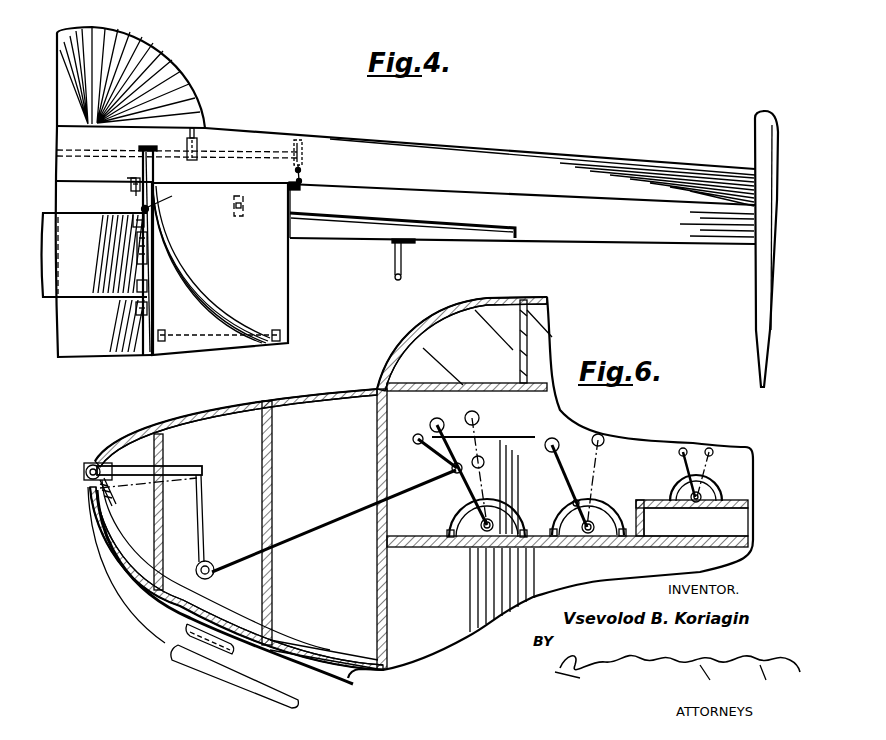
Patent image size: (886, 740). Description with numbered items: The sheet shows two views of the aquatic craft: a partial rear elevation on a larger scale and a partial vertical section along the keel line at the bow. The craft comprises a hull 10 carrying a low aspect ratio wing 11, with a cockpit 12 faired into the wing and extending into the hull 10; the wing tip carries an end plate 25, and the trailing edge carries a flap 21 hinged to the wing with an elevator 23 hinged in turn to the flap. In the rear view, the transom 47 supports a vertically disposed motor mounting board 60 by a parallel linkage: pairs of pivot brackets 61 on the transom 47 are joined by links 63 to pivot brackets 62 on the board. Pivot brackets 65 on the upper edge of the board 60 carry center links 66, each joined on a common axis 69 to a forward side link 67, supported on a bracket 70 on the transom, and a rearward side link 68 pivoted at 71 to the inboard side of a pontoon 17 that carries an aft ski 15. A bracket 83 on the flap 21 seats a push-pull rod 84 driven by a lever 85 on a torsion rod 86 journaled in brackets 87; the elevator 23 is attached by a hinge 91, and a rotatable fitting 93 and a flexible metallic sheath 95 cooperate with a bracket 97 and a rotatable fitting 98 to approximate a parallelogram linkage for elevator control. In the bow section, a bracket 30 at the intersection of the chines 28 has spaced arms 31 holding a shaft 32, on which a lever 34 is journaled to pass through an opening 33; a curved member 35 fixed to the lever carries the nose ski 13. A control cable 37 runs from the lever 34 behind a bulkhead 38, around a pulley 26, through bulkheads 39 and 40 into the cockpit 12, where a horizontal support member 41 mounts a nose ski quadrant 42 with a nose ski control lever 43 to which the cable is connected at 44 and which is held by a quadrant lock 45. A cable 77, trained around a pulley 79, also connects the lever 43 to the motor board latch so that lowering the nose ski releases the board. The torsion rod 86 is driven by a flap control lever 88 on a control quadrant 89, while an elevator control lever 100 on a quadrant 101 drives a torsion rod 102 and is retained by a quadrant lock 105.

In FIG. 4, the hull 10 is at (88, 350).
In FIG. 6, the hull 10 is at (280, 650).
In FIG. 4, the wing 11 is at (587, 146).
In FIG. 6, the cockpit 12 is at (557, 420).
In FIG. 6, the nose ski 13 is at (338, 692).
In FIG. 4, the aft ski 15 is at (232, 345).
In FIG. 4, the pontoon 17 is at (284, 290).
In FIG. 4, the flap 21 is at (615, 240).
In FIG. 4, the elevator 23 is at (490, 240).
In FIG. 4, the end plate 25 is at (756, 143).
In FIG. 6, the pulley 26 is at (215, 560).
In FIG. 6, the chines 28 is at (352, 650).
In FIG. 6, the bracket 30 is at (114, 500).
In FIG. 6, the spaced arms 31 is at (98, 462).
In FIG. 6, the shaft 32 is at (84, 476).
In FIG. 6, the opening 33 is at (118, 487).
In FIG. 6, the lever 34 is at (176, 466).
In FIG. 6, the curved member 35 is at (112, 568).
In FIG. 6, the control cable 37 is at (336, 528).
In FIG. 6, the bulkhead 38 is at (165, 530).
In FIG. 6, the bulkhead 39 is at (274, 452).
In FIG. 6, the bulkhead 40 is at (378, 470).
In FIG. 6, the horizontal support member 41 is at (418, 550).
In FIG. 6, the nose ski quadrant 42 is at (515, 486).
In FIG. 6, the nose ski control lever 43 is at (442, 418).
In FIG. 6, the cable connection 44 is at (455, 476).
In FIG. 6, the quadrant lock 45 is at (450, 522).
In FIG. 4, the transom 47 is at (90, 315).
In FIG. 4, the motor mounting board 60 is at (55, 296).
In FIG. 4, the pivot brackets 61 is at (148, 306).
In FIG. 4, the pivot brackets 62 is at (148, 270).
In FIG. 4, the link 63 is at (148, 288).
In FIG. 4, the pivot bracket 65 is at (133, 214).
In FIG. 4, the center link 66 is at (131, 186).
In FIG. 4, the side link 67 is at (140, 170).
In FIG. 4, the side link 68 is at (160, 176).
In FIG. 4, the common axis 69 is at (147, 150).
In FIG. 4, the bracket 70 is at (127, 178).
In FIG. 4, the pivot connection 71 is at (168, 201).
In FIG. 6, the cable 77 is at (510, 436).
In FIG. 6, the pulley 79 is at (415, 448).
In FIG. 4, the bracket 83 is at (300, 192).
In FIG. 4, the push-pull rod 84 is at (296, 177).
In FIG. 4, the lever 85 is at (302, 142).
In FIG. 4, the torsion rod 86 is at (254, 158).
In FIG. 6, the torsion rod 86 is at (580, 549).
In FIG. 4, the brackets 87 is at (295, 142).
In FIG. 6, the flap control lever 88 is at (570, 472).
In FIG. 6, the control quadrant 89 is at (612, 516).
In FIG. 4, the hinge 91 is at (466, 224).
In FIG. 4, the rotatable fitting 93 is at (392, 245).
In FIG. 4, the flexible metallic sheath 95 is at (394, 262).
In FIG. 4, the bracket 97 is at (404, 262).
In FIG. 4, the rotatable fitting 98 is at (393, 285).
In FIG. 6, the elevator control lever 100 is at (680, 462).
In FIG. 6, the quadrant 101 is at (722, 460).
In FIG. 6, the torsion rod 102 is at (688, 516).
In FIG. 6, the quadrant lock 105 is at (679, 488).